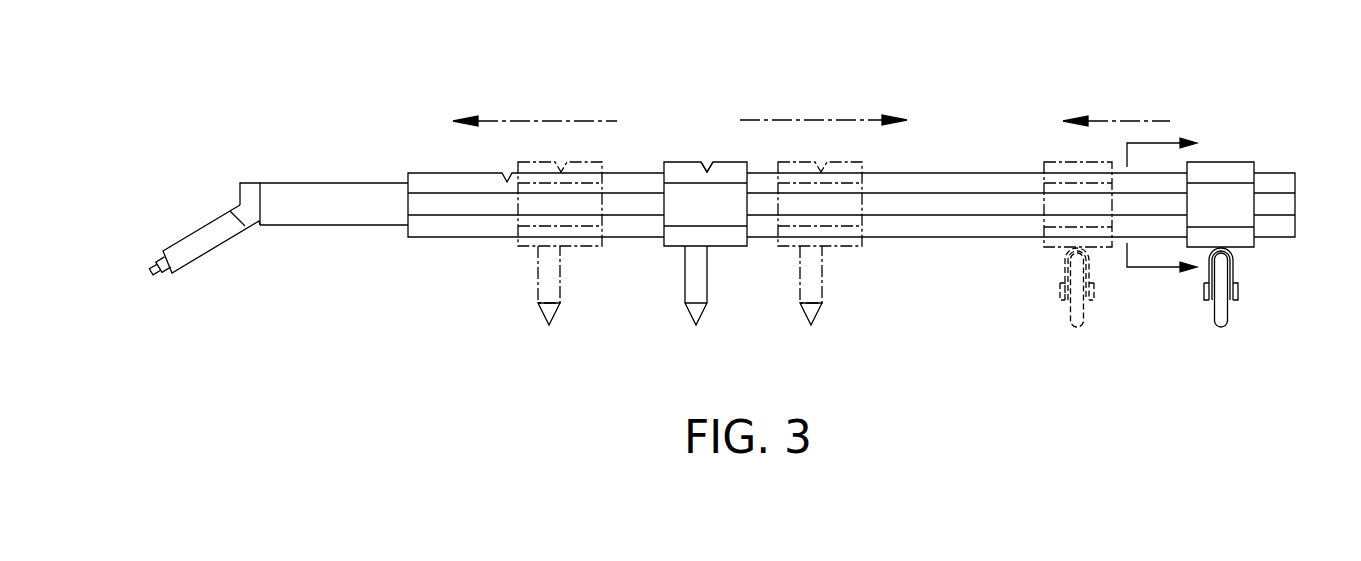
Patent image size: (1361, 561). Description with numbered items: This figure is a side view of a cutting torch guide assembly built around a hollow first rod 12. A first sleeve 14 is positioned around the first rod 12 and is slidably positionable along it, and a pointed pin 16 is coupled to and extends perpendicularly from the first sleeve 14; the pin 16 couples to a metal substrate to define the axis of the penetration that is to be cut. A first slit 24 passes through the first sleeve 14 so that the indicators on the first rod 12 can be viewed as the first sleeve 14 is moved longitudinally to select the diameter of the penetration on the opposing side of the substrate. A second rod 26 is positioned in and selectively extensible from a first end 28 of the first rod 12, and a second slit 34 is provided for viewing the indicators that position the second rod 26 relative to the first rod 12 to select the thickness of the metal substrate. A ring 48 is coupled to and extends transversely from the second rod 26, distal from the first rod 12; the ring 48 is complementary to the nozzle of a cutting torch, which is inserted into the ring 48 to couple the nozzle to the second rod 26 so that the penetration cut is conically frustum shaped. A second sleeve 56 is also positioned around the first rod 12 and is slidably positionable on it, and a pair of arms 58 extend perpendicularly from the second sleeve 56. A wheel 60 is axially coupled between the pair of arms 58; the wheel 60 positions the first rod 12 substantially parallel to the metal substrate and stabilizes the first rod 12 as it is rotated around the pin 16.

The first rod 12 is at (962, 173).
The first sleeve 14 is at (720, 177).
The pin 16 is at (700, 283).
The first slit 24 is at (706, 170).
The second rod 26 is at (323, 203).
The first end 28 is at (408, 173).
The second slit 34 is at (507, 178).
The ring 48 is at (192, 243).
The second sleeve 56 is at (1221, 172).
The pair of arms 58 is at (1273, 345).
The wheel 60 is at (1222, 272).